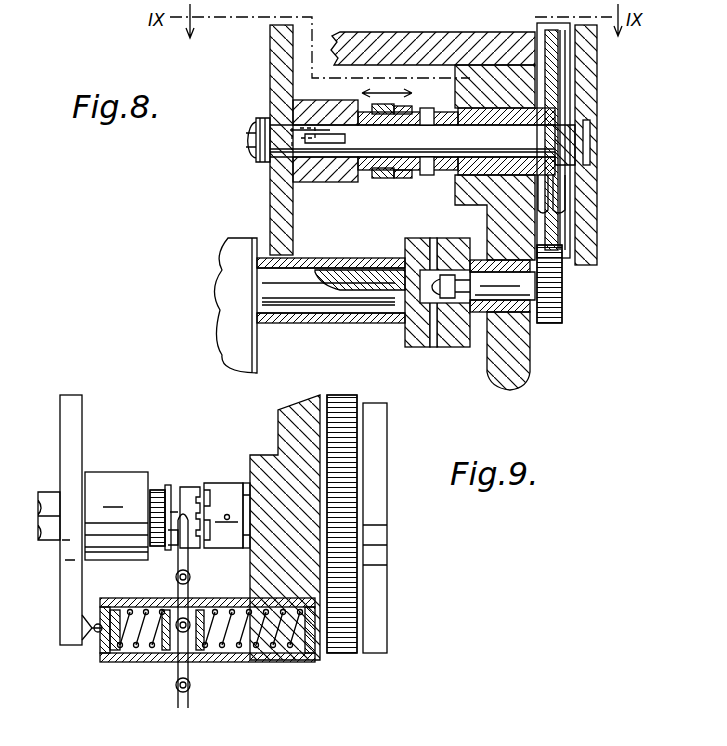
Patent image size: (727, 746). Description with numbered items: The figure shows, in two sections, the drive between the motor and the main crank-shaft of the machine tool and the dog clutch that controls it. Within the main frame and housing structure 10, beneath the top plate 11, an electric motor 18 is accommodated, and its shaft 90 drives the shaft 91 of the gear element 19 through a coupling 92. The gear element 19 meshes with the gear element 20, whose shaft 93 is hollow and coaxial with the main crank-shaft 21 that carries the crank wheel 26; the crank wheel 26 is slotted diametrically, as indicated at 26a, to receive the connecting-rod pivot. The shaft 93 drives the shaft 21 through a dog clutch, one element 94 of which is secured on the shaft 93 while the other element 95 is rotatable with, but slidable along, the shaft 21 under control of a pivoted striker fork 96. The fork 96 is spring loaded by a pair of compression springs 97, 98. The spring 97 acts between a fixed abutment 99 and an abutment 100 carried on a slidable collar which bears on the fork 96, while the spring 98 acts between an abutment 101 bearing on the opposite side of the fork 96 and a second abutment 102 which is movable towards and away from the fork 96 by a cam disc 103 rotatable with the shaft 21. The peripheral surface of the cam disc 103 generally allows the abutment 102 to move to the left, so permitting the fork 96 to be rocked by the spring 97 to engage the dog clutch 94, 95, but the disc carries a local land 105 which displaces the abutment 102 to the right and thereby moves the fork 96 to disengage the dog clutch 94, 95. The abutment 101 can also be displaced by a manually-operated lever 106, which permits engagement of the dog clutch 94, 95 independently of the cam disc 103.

In FIG. 8, the main frame and housing structure 10 is at (522, 376).
In FIG. 8, the top plate 11 is at (366, 38).
In FIG. 8, the electric motor 18 is at (228, 323).
In FIG. 8, the gear element 19 is at (562, 296).
In FIG. 8, the gear element 20 is at (545, 28).
In FIG. 9, the gear element 20 is at (355, 432).
In FIG. 8, the main crank-shaft 21 is at (556, 158).
In FIG. 8, the crank wheel 26 is at (590, 42).
In FIG. 9, the crank wheel 26 is at (380, 459).
In FIG. 8, the diametrical slot 26a is at (590, 142).
In FIG. 8, the motor shaft 90 is at (312, 300).
In FIG. 8, the gear element shaft 91 is at (515, 300).
In FIG. 8, the coupling 92 is at (440, 340).
In FIG. 8, the hollow shaft 93 is at (477, 110).
In FIG. 8, the dog clutch element 94 is at (426, 110).
In FIG. 9, the dog clutch element 94 is at (228, 482).
In FIG. 8, the dog clutch element 95 is at (404, 178).
In FIG. 9, the dog clutch element 95 is at (186, 486).
In FIG. 8, the striker fork 96 is at (380, 178).
In FIG. 9, the striker fork 96 is at (190, 568).
In FIG. 9, the compression spring 97 is at (252, 640).
In FIG. 9, the compression spring 98 is at (122, 612).
In FIG. 9, the fixed abutment 99 is at (312, 655).
In FIG. 9, the abutment 100 is at (200, 650).
In FIG. 9, the abutment 101 is at (165, 648).
In FIG. 9, the abutment 102 is at (112, 650).
In FIG. 8, the cam disc 103 is at (278, 46).
In FIG. 9, the cam disc 103 is at (70, 396).
In FIG. 8, the local land 105 is at (284, 112).
In FIG. 9, the local land 105 is at (90, 630).
In FIG. 9, the manually-operated lever 106 is at (178, 695).